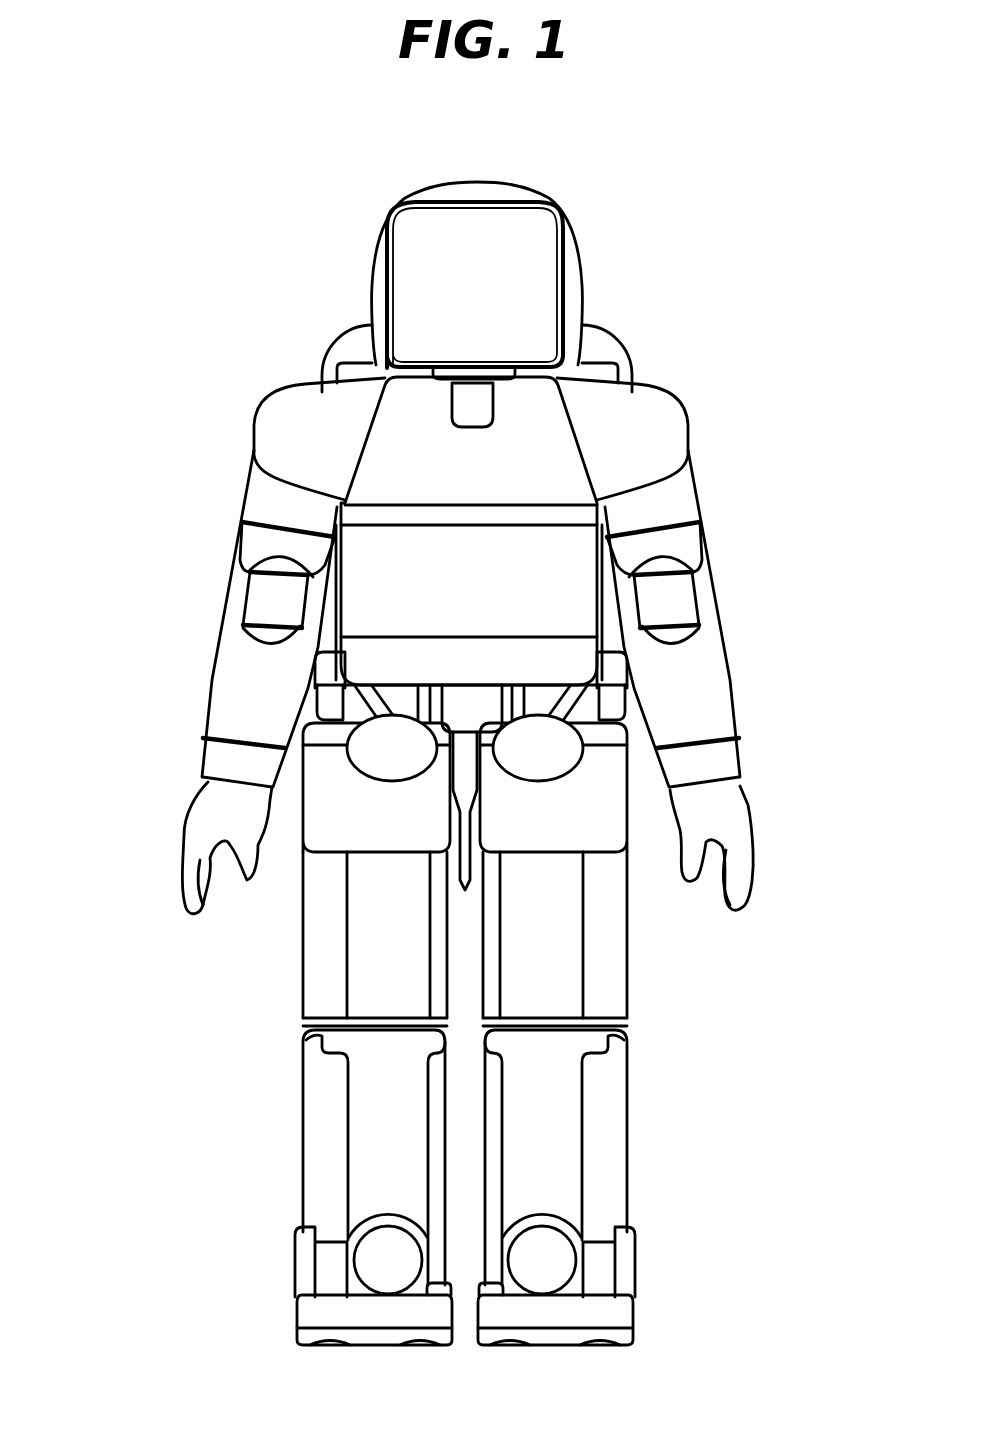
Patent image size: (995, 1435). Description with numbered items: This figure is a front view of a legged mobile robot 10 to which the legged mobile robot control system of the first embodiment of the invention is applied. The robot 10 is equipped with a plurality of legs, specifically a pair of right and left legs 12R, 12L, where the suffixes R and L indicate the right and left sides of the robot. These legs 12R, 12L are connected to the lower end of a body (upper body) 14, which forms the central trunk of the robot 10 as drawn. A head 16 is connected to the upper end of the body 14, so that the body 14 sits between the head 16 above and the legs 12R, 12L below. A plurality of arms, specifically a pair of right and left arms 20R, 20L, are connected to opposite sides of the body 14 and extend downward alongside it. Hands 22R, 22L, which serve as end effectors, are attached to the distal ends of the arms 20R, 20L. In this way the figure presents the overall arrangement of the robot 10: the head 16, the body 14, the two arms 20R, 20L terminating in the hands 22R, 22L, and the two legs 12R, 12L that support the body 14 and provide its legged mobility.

The legged mobile robot 10 is at (642, 328).
The right leg 12R is at (245, 1035).
The left leg 12L is at (673, 1042).
The body (upper body) 14 is at (572, 621).
The head 16 is at (528, 200).
The right arm 20R is at (212, 497).
The left arm 20L is at (722, 485).
The right hand (end effector) 22R is at (202, 828).
The left hand (end effector) 22L is at (730, 815).